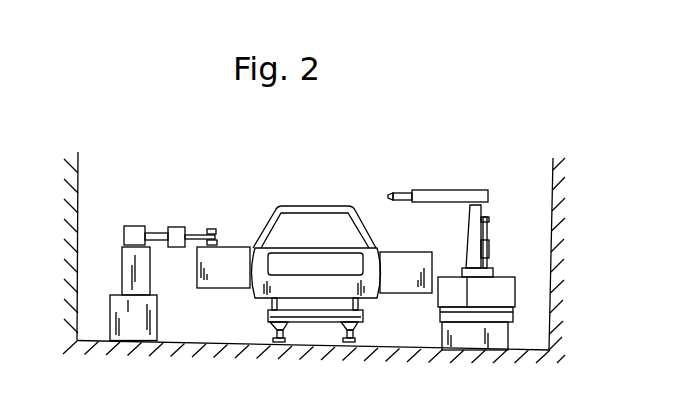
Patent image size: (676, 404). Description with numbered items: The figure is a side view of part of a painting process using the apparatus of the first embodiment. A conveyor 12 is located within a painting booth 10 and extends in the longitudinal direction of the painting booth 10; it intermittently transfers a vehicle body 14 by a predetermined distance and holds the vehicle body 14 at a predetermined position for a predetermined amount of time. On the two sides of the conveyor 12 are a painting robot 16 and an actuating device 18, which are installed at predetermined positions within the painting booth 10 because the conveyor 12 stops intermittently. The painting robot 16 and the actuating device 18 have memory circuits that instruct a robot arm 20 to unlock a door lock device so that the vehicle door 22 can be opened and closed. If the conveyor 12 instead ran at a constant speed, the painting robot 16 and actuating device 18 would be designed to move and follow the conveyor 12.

The painting booth 10 is at (553, 189).
The conveyor 12 is at (362, 318).
The vehicle body 14 is at (318, 206).
The painting robot 16 is at (500, 288).
The actuating device 18 is at (138, 258).
The robot arm 20 is at (198, 230).
The vehicle door 22 is at (225, 280).